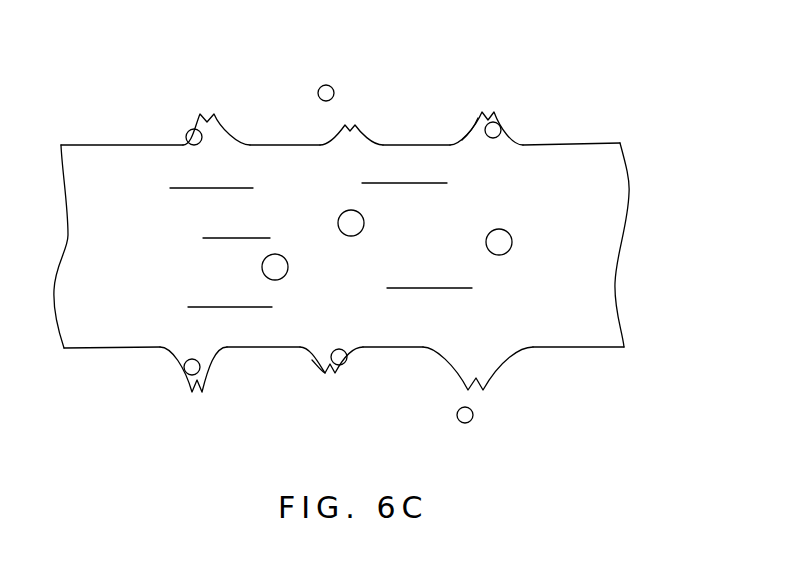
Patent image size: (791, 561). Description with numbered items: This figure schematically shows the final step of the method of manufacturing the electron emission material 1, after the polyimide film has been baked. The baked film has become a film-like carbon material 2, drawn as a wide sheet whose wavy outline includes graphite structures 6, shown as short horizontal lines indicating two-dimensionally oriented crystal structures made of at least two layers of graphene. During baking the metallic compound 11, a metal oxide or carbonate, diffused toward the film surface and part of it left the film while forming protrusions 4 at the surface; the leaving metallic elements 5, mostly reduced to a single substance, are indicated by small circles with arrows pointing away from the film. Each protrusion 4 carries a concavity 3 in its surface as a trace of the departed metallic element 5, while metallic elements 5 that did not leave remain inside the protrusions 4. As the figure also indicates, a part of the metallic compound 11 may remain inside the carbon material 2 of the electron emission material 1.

The electron emission material 1 is at (622, 100).
The carbon material 2 is at (616, 193).
The concavity 3 is at (487, 110).
The protrusion 4 is at (478, 140).
The metallic element 5 is at (311, 54).
The graphite structure 6 is at (274, 238).
The metallic compound 11 is at (350, 224).